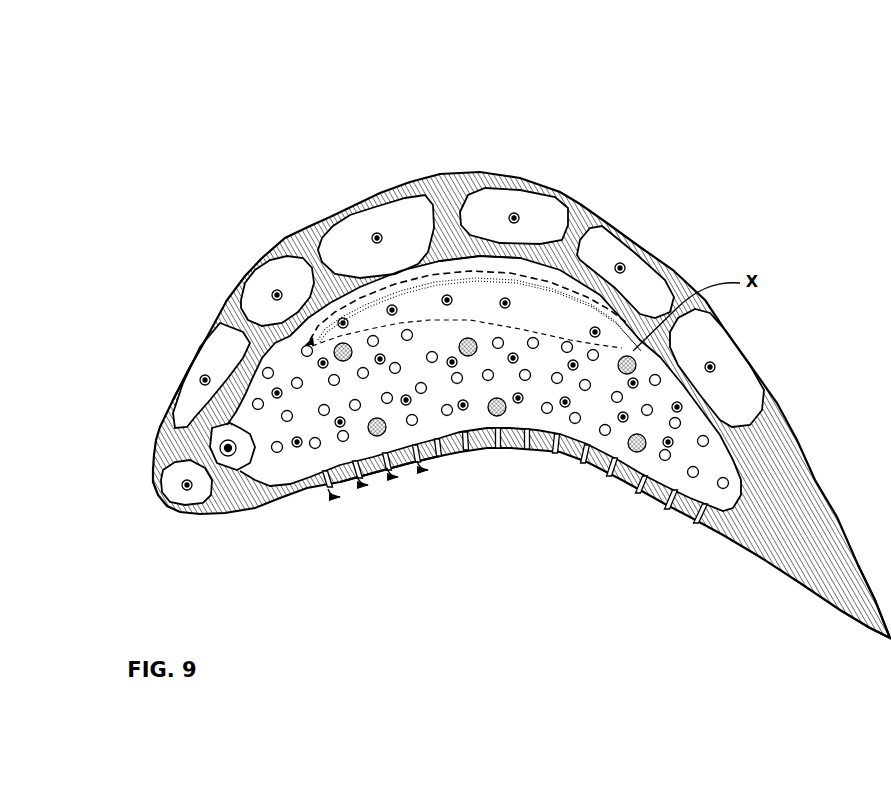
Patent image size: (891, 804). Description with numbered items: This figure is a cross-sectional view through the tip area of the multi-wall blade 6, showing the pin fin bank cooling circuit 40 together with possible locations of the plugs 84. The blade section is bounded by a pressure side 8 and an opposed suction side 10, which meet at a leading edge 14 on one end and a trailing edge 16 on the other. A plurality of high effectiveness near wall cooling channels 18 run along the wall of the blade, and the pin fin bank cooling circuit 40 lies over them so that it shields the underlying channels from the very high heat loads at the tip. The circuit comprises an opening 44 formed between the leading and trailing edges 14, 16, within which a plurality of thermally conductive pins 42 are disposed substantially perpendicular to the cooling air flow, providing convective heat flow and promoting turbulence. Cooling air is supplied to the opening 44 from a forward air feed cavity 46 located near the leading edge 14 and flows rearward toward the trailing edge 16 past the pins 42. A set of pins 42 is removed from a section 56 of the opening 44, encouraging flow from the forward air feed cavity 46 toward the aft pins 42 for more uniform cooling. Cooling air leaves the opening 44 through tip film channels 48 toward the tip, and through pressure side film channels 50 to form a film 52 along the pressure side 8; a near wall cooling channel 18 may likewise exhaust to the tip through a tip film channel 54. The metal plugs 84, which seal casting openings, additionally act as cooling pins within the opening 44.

The multi-wall blade 6 is at (735, 133).
The pressure side 8 is at (408, 517).
The suction side 10 is at (482, 133).
The leading edge 14 is at (143, 520).
The trailing edge 16 is at (850, 652).
The near wall cooling channels 18 is at (197, 348).
The pin fin bank cooling circuit 40 is at (453, 251).
The pins 42 is at (499, 338).
The opening 44 is at (455, 349).
The forward air feed cavity 46 is at (237, 471).
The tip film channel 48 is at (322, 369).
The pressure side film channel 50 is at (555, 455).
The film 52 is at (353, 500).
The tip film channel 54 is at (372, 238).
The section 56 is at (485, 313).
The plug 84 is at (621, 373).